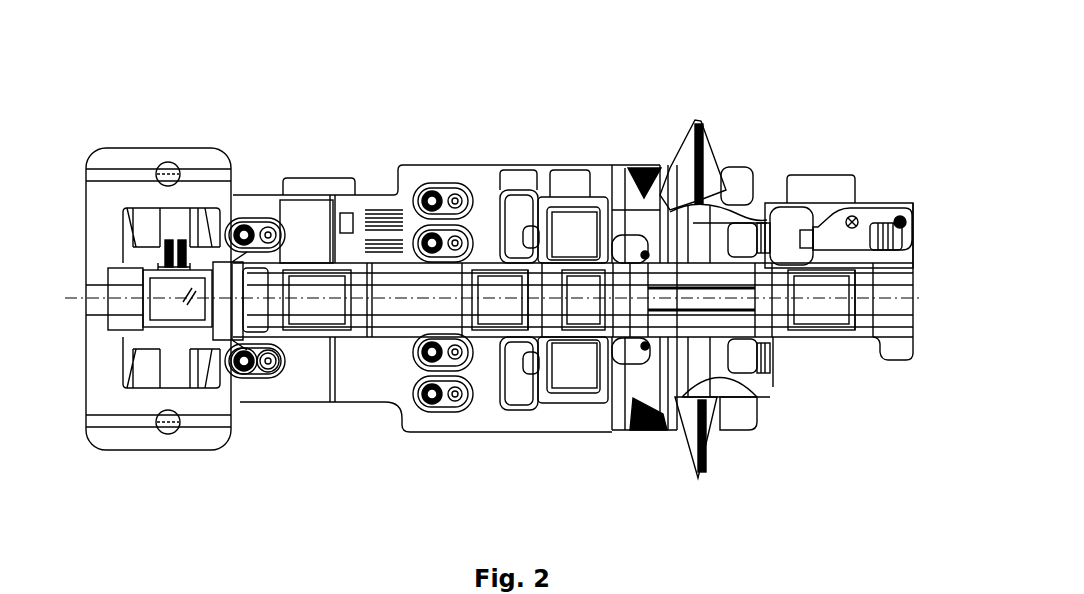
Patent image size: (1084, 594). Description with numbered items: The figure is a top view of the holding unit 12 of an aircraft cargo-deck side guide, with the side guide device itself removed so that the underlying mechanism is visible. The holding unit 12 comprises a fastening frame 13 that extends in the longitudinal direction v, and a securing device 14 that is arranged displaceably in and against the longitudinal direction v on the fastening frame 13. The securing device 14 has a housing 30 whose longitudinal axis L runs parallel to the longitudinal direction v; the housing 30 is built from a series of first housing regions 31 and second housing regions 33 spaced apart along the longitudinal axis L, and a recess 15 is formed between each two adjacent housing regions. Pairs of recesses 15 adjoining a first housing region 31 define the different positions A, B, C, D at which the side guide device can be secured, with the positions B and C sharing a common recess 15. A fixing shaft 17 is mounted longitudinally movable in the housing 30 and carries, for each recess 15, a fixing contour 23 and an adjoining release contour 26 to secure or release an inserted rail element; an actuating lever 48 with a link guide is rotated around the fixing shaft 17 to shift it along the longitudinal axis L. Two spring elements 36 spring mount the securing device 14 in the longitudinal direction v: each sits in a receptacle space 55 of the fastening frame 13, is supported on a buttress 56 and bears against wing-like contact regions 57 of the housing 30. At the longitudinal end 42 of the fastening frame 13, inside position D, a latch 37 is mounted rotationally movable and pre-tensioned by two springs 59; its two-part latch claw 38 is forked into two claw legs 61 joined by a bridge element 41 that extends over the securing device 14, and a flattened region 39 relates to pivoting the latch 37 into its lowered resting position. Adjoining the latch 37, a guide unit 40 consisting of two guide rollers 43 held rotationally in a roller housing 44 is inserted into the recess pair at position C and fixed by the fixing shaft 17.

The holding unit 12 is at (196, 104).
The fastening frame 13 is at (238, 403).
The securing device 14 is at (912, 300).
The recesses 15 is at (247, 222).
The fixing shaft 17 is at (858, 342).
The fixing contour 23 is at (262, 378).
The release contour 26 is at (278, 378).
The housing 30 is at (393, 322).
The first housing region 31 is at (318, 330).
The second housing region 33 is at (292, 336).
The spring element 36 is at (150, 388).
The latch 37 is at (643, 213).
The two-part latch claw 38 is at (720, 243).
The flattened region 39 is at (732, 280).
The guide unit 40 is at (573, 420).
The bridge element 41 is at (661, 290).
The longitudinal end 42 is at (922, 298).
The guide roller 43 is at (533, 372).
The roller housing 44 is at (557, 375).
The actuating lever 48 is at (186, 238).
The receptacle space 55 is at (160, 222).
The buttress 56 is at (122, 245).
The wing-like contact regions 57 is at (237, 228).
The springs 59 is at (640, 420).
The claw legs 61 is at (735, 375).
The longitudinal axis L is at (82, 300).
The first position A is at (311, 178).
The second position B is at (499, 170).
The third position C is at (581, 170).
The fourth position D is at (811, 175).
The longitudinal direction v is at (440, 62).